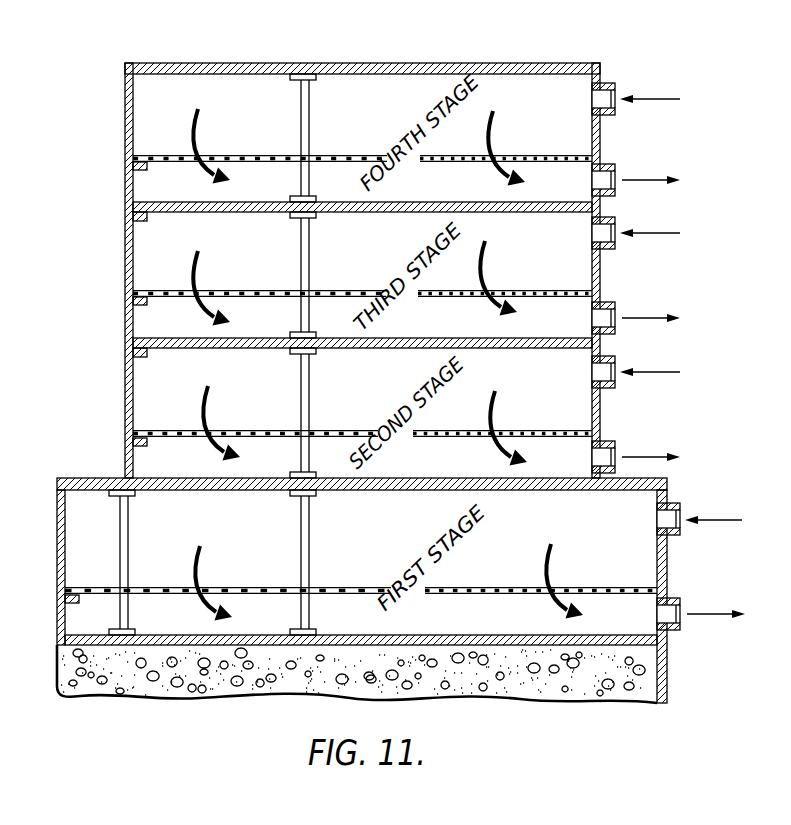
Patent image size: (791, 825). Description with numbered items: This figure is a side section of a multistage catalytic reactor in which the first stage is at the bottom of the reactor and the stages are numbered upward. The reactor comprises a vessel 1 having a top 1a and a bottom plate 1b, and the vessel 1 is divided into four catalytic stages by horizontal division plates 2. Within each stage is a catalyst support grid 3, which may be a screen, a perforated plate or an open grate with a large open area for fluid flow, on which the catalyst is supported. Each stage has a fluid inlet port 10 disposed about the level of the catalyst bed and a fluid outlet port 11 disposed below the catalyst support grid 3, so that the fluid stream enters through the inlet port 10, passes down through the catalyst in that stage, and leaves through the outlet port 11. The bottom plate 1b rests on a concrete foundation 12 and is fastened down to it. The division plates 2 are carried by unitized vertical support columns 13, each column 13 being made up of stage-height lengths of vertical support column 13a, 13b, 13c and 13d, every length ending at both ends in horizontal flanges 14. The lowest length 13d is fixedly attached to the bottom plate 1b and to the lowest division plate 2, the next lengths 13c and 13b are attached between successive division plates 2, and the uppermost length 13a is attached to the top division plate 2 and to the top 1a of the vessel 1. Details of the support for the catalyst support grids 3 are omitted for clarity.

The vessel 1 is at (125, 231).
The top 1a is at (188, 63).
The bottom plate 1b is at (186, 636).
The division plate 2 is at (507, 212).
The catalyst support grid 3 is at (521, 155).
The fluid inlet port 10 is at (616, 83).
The fluid outlet port 11 is at (616, 164).
The concrete foundation 12 is at (264, 681).
The vertical support column 13 is at (129, 525).
The length of vertical support column 13a is at (310, 118).
The length of vertical support column 13b is at (310, 259).
The length of vertical support column 13c is at (310, 402).
The length of vertical support column 13d is at (310, 545).
The horizontal flange 14 is at (316, 80).